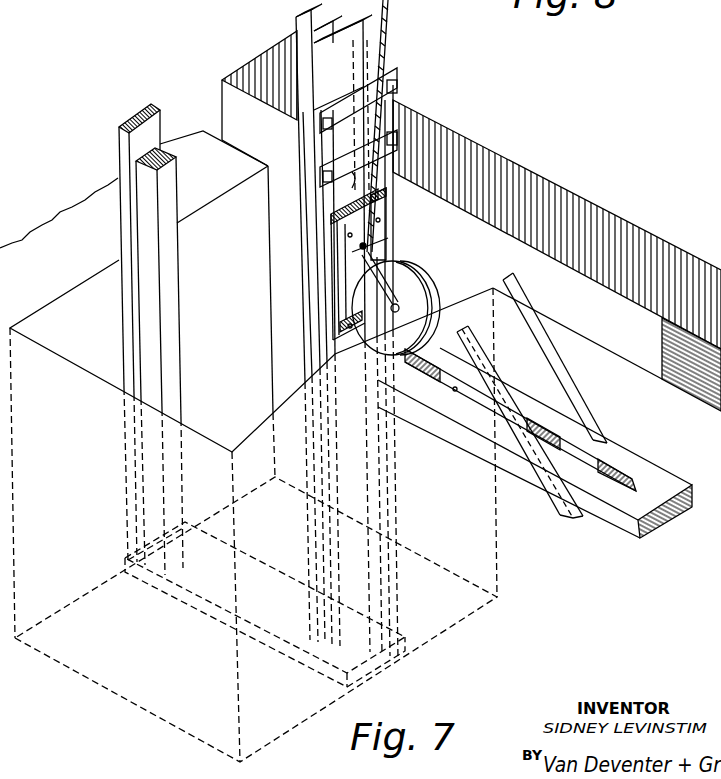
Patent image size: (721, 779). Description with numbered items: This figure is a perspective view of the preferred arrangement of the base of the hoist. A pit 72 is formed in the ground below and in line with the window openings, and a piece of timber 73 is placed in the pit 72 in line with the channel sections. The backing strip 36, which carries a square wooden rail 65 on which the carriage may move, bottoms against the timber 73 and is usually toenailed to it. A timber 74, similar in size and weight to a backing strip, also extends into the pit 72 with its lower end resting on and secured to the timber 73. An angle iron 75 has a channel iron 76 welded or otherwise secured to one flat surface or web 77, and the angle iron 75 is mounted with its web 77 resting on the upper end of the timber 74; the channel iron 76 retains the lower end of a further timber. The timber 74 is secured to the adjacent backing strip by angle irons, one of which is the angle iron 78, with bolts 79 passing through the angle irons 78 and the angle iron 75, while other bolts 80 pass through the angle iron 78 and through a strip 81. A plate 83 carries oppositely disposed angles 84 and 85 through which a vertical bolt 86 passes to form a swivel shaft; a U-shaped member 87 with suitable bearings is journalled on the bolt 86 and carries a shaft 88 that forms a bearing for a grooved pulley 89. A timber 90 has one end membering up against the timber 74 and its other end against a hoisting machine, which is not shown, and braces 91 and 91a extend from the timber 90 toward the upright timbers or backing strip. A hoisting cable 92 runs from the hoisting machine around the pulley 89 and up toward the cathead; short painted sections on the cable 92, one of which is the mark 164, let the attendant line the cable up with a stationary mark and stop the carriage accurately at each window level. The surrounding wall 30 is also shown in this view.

The concrete wall 30 is at (531, 185).
The backing strip 36 is at (147, 110).
The square wooden rail 65 is at (147, 193).
The pit 72 is at (67, 312).
The piece of timber 73 is at (217, 610).
The timber 74 is at (328, 293).
The angle iron 75 is at (388, 77).
The channel iron 76 is at (311, 113).
The web 77 is at (300, 107).
The angle iron 78 is at (310, 166).
The bolts 79 is at (397, 90).
The bolts 80 is at (398, 136).
The strip 81 is at (346, 186).
The plate 83 is at (380, 233).
The angle 84 is at (352, 252).
The angle 85 is at (362, 323).
The vertical bolt 86 is at (360, 245).
The U-shaped member 87 is at (385, 256).
The shaft 88 is at (400, 302).
The grooved pulley 89 is at (435, 299).
The timber 90 is at (487, 448).
The brace 91 is at (496, 383).
The brace 91a is at (570, 383).
The hoisting cable 92 is at (454, 390).
The mark 164 is at (590, 453).